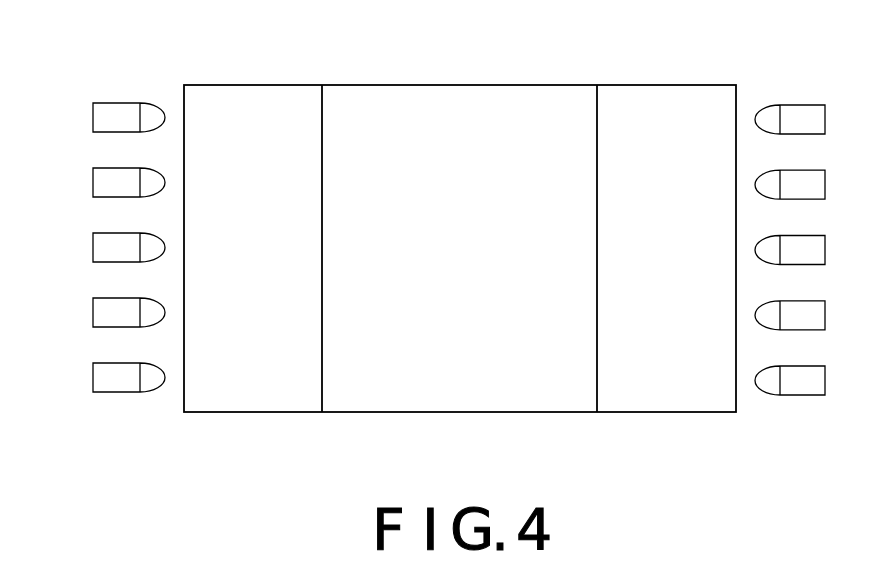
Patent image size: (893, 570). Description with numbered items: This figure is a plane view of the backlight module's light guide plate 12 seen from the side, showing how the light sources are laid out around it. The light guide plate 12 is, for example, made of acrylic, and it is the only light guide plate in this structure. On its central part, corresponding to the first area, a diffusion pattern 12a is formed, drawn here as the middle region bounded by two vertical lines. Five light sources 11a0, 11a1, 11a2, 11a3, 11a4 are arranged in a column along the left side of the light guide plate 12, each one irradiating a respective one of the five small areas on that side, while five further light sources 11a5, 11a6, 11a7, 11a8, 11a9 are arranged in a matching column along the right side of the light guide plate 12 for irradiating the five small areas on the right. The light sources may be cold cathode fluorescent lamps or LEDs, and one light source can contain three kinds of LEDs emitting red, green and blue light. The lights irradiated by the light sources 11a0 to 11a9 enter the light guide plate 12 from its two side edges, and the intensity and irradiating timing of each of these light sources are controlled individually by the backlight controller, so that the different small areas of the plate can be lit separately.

The light guide plate 12 is at (251, 84).
The diffusion pattern 12a is at (385, 125).
The light source 11a0 is at (118, 131).
The light source 11a1 is at (118, 196).
The light source 11a2 is at (118, 262).
The light source 11a3 is at (118, 327).
The light source 11a4 is at (118, 392).
The light source 11a5 is at (800, 134).
The light source 11a6 is at (800, 199).
The light source 11a7 is at (800, 265).
The light source 11a8 is at (800, 330).
The light source 11a9 is at (800, 395).